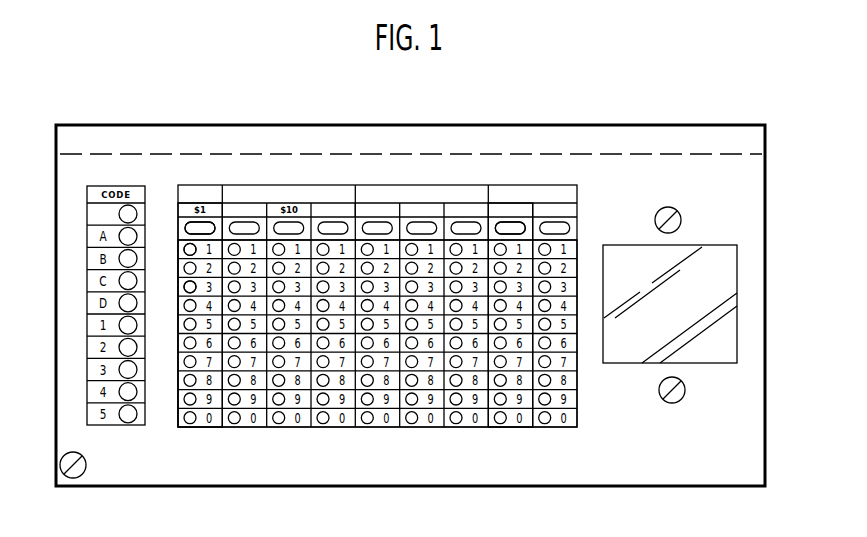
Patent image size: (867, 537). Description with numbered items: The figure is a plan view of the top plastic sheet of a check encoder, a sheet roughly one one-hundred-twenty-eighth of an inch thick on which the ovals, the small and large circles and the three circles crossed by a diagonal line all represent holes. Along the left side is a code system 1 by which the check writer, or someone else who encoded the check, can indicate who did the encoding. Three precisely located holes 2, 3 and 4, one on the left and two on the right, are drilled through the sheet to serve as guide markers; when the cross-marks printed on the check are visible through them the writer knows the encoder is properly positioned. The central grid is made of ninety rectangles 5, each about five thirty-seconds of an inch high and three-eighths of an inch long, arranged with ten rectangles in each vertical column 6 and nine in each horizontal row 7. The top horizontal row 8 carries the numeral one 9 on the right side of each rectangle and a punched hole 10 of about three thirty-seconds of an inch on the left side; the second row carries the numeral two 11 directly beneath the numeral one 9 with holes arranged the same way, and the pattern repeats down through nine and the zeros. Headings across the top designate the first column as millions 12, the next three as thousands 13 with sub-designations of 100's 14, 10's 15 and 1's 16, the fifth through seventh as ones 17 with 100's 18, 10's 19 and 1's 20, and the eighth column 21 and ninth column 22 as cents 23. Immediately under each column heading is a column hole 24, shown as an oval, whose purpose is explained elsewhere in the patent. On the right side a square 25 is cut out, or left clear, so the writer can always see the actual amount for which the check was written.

The code system 1 is at (86, 194).
The precisely located hole 2 is at (69, 478).
The precisely located hole 3 is at (685, 389).
The precisely located hole 4 is at (676, 207).
The rectangles 5 is at (206, 429).
The vertical column 6 is at (585, 243).
The horizontal row 7 is at (178, 446).
The top horizontal row 8 is at (183, 255).
The numeral one 9 is at (205, 248).
The hole 10 is at (203, 265).
The numeral two 11 is at (201, 272).
The millions column 12 is at (205, 192).
The thousands heading 13 is at (348, 207).
The 100's designation 14 is at (229, 207).
The 10's designation 15 is at (280, 192).
The 1's designation 16 is at (360, 206).
The ones heading 17 is at (463, 193).
The 100's designation 18 is at (385, 205).
The 10's designation 19 is at (435, 207).
The 1's designation 20 is at (478, 206).
The eighth column 21 is at (498, 205).
The ninth column 22 is at (571, 209).
The cents heading 23 is at (570, 187).
The column hole 24 is at (521, 229).
The square cut-out 25 is at (730, 333).